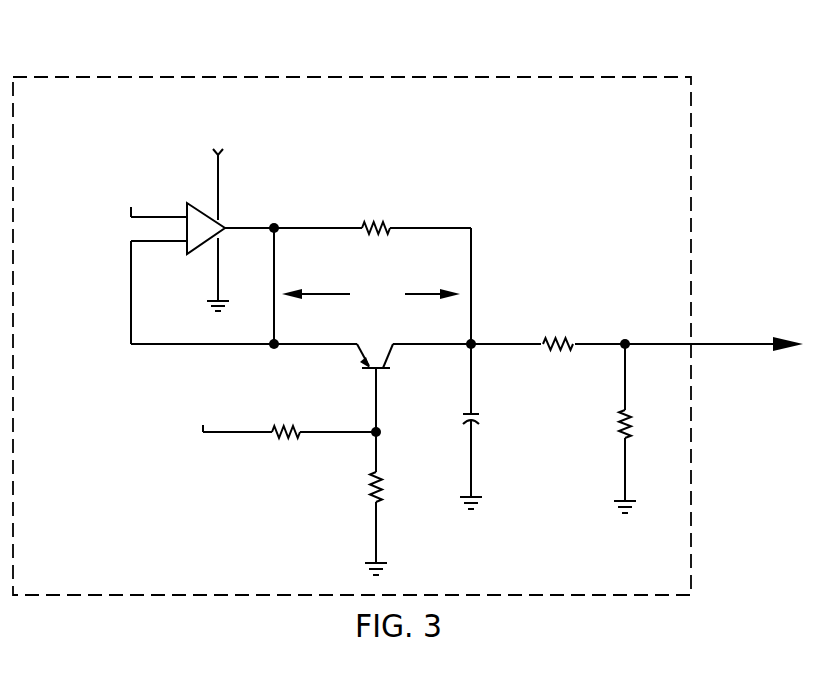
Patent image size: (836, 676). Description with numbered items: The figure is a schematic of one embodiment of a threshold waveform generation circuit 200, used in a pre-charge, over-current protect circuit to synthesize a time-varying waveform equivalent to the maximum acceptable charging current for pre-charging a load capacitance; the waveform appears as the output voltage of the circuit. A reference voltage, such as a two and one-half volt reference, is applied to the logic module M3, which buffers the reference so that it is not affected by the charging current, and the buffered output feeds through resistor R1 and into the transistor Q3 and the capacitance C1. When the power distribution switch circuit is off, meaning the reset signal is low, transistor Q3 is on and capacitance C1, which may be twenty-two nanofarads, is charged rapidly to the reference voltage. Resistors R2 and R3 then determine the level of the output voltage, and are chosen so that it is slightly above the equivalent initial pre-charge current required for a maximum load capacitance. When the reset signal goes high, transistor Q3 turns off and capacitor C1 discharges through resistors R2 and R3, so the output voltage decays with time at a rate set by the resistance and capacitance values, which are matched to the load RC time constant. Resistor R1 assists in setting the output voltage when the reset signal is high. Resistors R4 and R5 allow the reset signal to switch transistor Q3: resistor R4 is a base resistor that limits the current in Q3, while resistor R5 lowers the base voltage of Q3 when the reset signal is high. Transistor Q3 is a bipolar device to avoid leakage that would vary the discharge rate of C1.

The threshold waveform generation circuit 200 is at (124, 53).
The logic module M3 is at (214, 218).
The resistor R1 is at (375, 228).
The transistor Q3 is at (375, 372).
The capacitance C1 is at (478, 426).
The resistor R2 is at (557, 348).
The resistor R3 is at (631, 428).
The resistor R4 is at (249, 436).
The resistor R5 is at (384, 503).